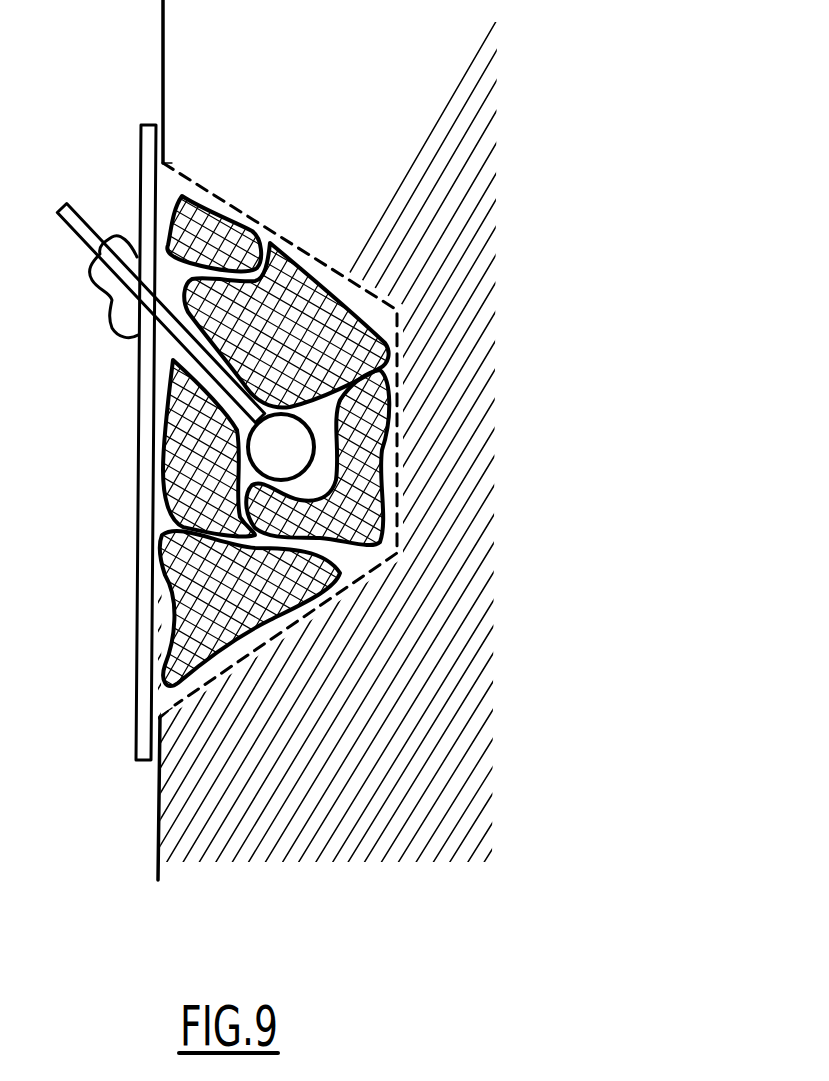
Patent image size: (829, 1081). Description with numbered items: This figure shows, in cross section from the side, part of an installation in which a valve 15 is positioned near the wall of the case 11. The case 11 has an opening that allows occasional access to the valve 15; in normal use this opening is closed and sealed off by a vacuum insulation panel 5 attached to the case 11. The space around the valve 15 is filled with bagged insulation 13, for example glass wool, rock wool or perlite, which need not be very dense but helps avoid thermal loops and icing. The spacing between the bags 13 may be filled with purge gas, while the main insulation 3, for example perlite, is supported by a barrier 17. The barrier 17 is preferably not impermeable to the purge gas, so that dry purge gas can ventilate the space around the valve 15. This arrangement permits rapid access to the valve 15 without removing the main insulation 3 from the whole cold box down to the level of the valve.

The main insulation 3 is at (445, 102).
The vacuum insulation panel 5 is at (138, 532).
The case 11 is at (163, 65).
The bagged insulation 13 is at (187, 217).
The valve 15 is at (173, 333).
The barrier 17 is at (183, 702).